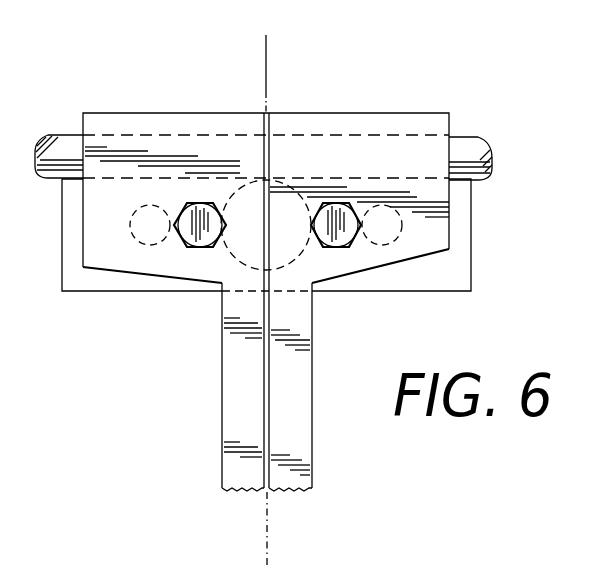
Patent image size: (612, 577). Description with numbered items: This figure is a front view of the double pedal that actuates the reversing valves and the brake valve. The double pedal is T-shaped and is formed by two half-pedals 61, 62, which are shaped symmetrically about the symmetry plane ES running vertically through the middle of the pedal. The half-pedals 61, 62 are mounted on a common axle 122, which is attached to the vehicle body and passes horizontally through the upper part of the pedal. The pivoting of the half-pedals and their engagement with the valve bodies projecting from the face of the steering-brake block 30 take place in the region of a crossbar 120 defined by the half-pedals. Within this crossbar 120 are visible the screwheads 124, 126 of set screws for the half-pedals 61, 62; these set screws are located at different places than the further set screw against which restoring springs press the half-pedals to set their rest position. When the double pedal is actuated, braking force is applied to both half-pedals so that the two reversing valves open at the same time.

The steering-brake block 30 is at (92, 280).
The crossbar 120 is at (432, 223).
The common axle 122 is at (470, 145).
The screwhead 124 is at (341, 242).
The screwhead 126 is at (201, 241).
The half-pedal 61 is at (307, 438).
The half-pedal 62 is at (225, 398).
The symmetry plane ES is at (262, 542).